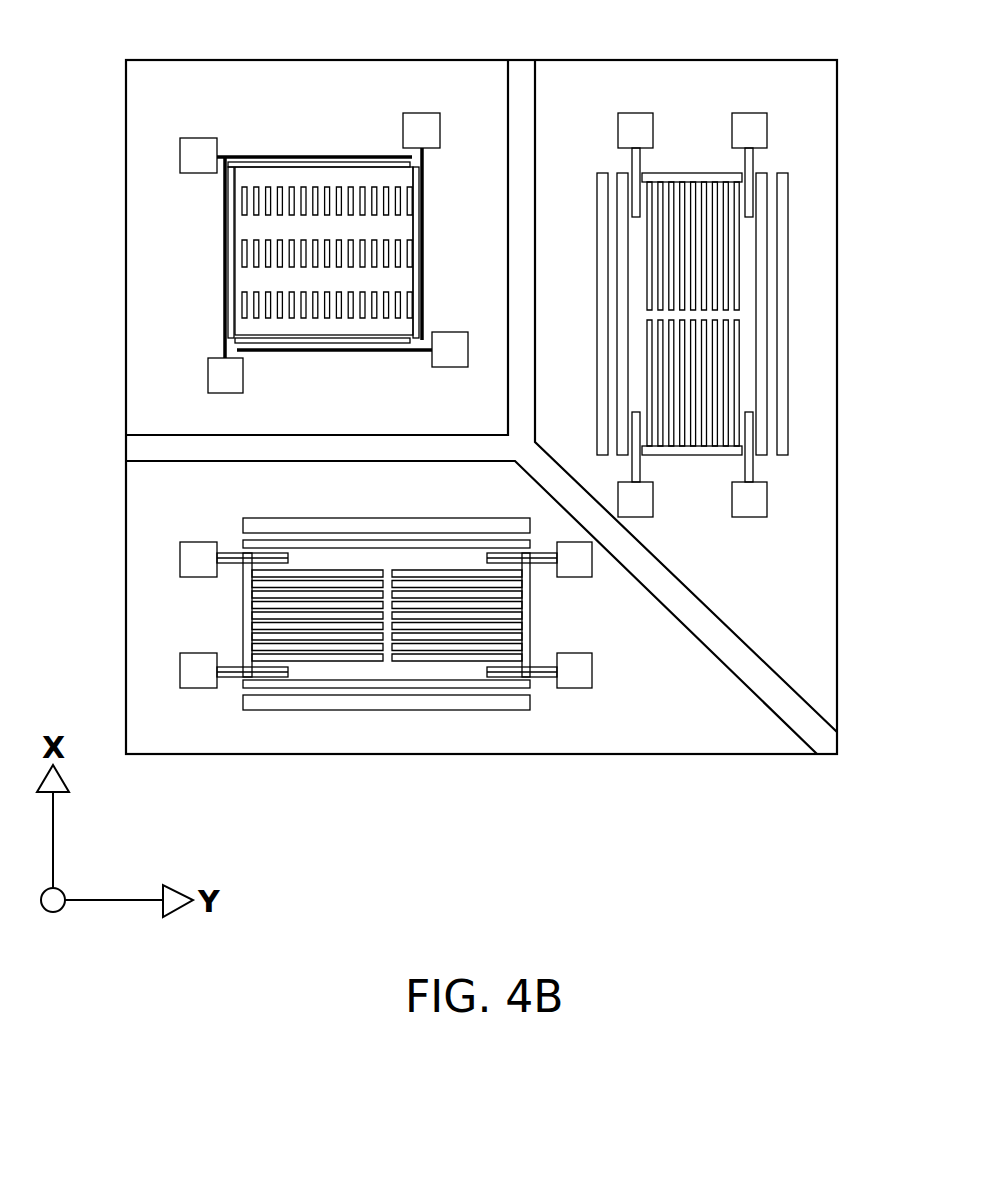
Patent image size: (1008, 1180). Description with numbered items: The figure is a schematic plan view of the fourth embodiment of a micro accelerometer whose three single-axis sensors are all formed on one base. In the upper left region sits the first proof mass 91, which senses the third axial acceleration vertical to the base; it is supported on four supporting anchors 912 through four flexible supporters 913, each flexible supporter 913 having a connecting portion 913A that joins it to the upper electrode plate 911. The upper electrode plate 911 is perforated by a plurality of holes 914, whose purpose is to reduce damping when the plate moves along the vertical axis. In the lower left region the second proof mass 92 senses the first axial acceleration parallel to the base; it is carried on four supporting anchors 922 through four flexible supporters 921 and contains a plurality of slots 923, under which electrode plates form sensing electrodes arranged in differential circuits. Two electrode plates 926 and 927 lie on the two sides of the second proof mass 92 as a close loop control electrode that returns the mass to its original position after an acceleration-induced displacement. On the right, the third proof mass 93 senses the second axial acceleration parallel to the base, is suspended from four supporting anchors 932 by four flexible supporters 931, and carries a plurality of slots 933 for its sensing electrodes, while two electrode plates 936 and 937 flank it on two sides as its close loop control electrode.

The first proof mass 91 is at (320, 140).
The upper electrode plate 911 is at (268, 178).
The supporting anchor 912 is at (180, 152).
The flexible supporter 913 is at (423, 250).
The connecting portion 913A is at (408, 158).
The hole 914 is at (265, 252).
The second proof mass 92 is at (380, 679).
The flexible supporter 921 is at (540, 677).
The supporting anchor 922 is at (594, 688).
The slot 923 is at (452, 657).
The electrode plate 926 is at (330, 710).
The electrode plate 927 is at (352, 520).
The third proof mass 93 is at (752, 368).
The flexible supporter 931 is at (641, 163).
The supporting anchor 932 is at (740, 113).
The slot 933 is at (740, 263).
The electrode plate 936 is at (595, 280).
The electrode plate 937 is at (790, 222).